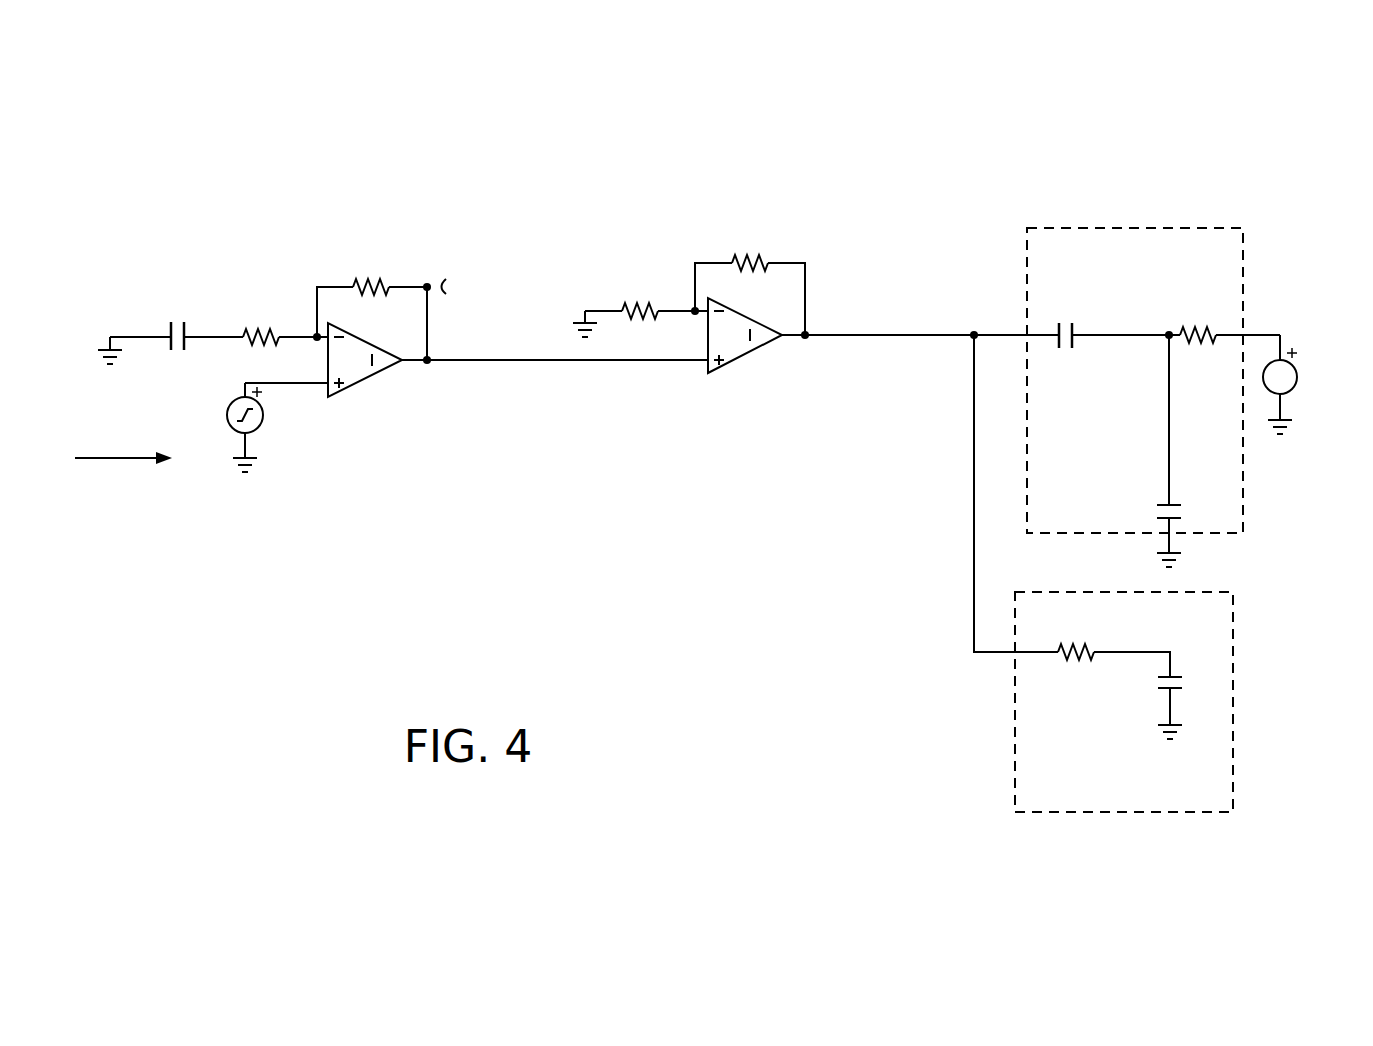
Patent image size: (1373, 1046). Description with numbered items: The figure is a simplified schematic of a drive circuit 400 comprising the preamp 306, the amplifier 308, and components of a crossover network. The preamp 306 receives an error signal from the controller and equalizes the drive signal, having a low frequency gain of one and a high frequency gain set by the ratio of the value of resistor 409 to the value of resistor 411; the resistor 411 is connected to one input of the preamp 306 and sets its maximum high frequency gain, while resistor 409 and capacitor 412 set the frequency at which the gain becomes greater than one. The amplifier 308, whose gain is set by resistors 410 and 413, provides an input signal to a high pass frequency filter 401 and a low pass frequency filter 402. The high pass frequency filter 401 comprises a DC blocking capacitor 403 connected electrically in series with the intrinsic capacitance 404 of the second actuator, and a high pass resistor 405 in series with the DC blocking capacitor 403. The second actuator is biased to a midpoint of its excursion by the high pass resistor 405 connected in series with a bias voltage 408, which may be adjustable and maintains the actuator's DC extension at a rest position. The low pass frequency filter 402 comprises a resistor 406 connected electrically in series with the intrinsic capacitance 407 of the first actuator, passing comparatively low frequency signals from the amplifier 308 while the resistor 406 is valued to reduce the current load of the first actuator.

The drive circuit 400 is at (672, 55).
The preamp 306 is at (345, 228).
The amplifier 308 is at (805, 212).
The high pass frequency filter 401 is at (1144, 227).
The low pass frequency filter 402 is at (1130, 813).
The DC blocking capacitor 403 is at (1066, 350).
The intrinsic capacitance 404 is at (1157, 510).
The high pass resistor 405 is at (1205, 344).
The resistor 406 is at (1076, 656).
The intrinsic capacitance 407 is at (1178, 676).
The bias voltage 408 is at (1298, 362).
The resistor 409 is at (374, 280).
The resistor 410 is at (751, 257).
The resistor 411 is at (266, 326).
The capacitor 412 is at (171, 318).
The resistor 413 is at (648, 300).